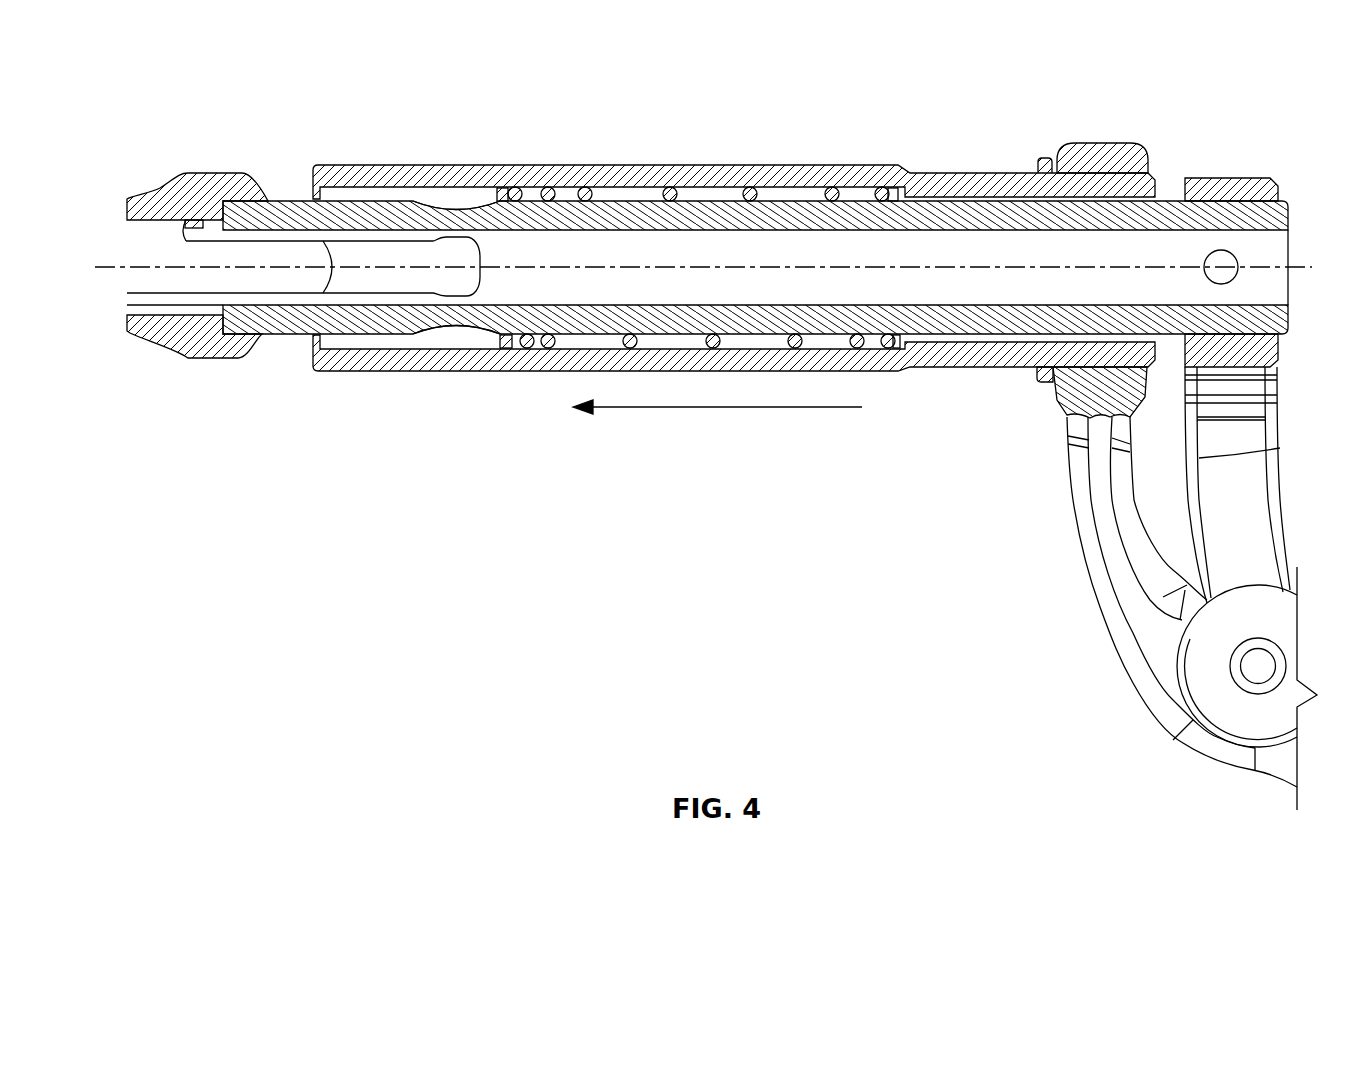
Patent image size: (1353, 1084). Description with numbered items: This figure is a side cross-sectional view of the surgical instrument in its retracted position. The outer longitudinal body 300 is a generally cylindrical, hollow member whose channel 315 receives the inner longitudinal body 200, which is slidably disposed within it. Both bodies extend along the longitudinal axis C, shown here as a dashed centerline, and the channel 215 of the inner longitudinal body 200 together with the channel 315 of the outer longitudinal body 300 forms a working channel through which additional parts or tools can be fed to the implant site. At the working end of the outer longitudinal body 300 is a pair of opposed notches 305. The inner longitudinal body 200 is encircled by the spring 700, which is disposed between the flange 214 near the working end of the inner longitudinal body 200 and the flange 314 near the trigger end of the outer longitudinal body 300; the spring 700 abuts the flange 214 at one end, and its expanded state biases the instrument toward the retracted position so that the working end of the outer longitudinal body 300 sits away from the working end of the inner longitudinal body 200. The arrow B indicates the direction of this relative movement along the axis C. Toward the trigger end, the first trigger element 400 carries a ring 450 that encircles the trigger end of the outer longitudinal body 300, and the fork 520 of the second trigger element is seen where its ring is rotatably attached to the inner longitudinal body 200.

The inner longitudinal body 200 is at (288, 212).
The channel of the inner longitudinal body 215 is at (250, 280).
The opposed notches 305 is at (323, 241).
The channel of the outer longitudinal body 315 is at (468, 205).
The outer longitudinal body 300 is at (358, 175).
The spring 700 is at (612, 175).
The flange 214 is at (503, 347).
The flange 314 is at (1043, 157).
The ring 450 is at (1097, 165).
The fork 520 is at (1238, 187).
The first trigger element 400 is at (1088, 572).
The direction arrow B is at (703, 408).
The longitudinal axis C is at (105, 267).